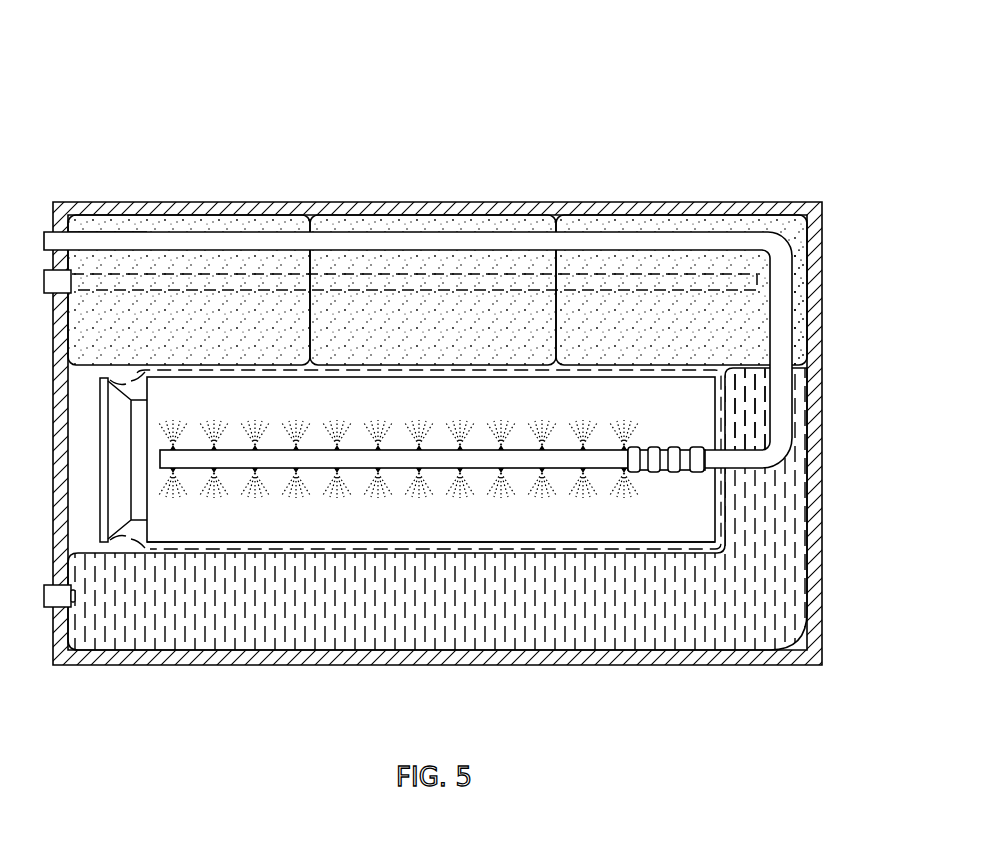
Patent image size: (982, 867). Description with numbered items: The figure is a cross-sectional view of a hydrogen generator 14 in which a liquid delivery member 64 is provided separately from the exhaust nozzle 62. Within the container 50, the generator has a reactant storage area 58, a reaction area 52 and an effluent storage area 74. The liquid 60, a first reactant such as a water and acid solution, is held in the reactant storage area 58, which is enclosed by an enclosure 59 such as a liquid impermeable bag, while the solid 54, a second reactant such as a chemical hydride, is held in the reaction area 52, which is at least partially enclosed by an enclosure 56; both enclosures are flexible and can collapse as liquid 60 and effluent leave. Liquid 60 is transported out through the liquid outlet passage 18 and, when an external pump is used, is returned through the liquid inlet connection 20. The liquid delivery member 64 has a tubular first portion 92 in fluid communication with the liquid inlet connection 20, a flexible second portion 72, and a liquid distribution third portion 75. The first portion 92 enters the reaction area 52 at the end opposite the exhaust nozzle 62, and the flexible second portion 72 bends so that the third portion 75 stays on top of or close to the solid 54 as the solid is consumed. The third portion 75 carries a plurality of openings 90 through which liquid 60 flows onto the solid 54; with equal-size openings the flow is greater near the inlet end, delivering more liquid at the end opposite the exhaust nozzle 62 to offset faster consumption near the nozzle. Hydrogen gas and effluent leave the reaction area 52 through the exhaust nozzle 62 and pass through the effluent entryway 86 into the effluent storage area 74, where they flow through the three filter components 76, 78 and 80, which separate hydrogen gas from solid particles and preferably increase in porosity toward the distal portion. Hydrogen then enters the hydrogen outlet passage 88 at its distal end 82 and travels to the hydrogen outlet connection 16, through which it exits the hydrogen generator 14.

The hydrogen generator 14 is at (172, 90).
The hydrogen outlet connection 16 is at (52, 283).
The liquid outlet passage 18 is at (44, 588).
The liquid inlet connection 20 is at (44, 242).
The container 50 is at (437, 437).
The reaction area 52 is at (178, 523).
The solid 54 is at (227, 523).
The enclosure 56 is at (263, 547).
The reactant storage area 58 is at (469, 549).
The enclosure 59 is at (805, 645).
The liquid 60 is at (469, 549).
The exhaust nozzle 62 is at (103, 485).
The liquid delivery member 64 is at (497, 541).
The flexible second portion 72 is at (688, 449).
The effluent storage area 74 is at (130, 235).
The liquid distribution third portion 75 is at (318, 457).
The filter component 76 is at (189, 250).
The filter component 78 is at (410, 222).
The filter component 80 is at (709, 250).
The distal end 82 is at (806, 277).
The effluent entryway 86 is at (83, 380).
The hydrogen outlet passage 88 is at (473, 245).
The openings 90 is at (460, 463).
The tubular first portion 92 is at (780, 398).